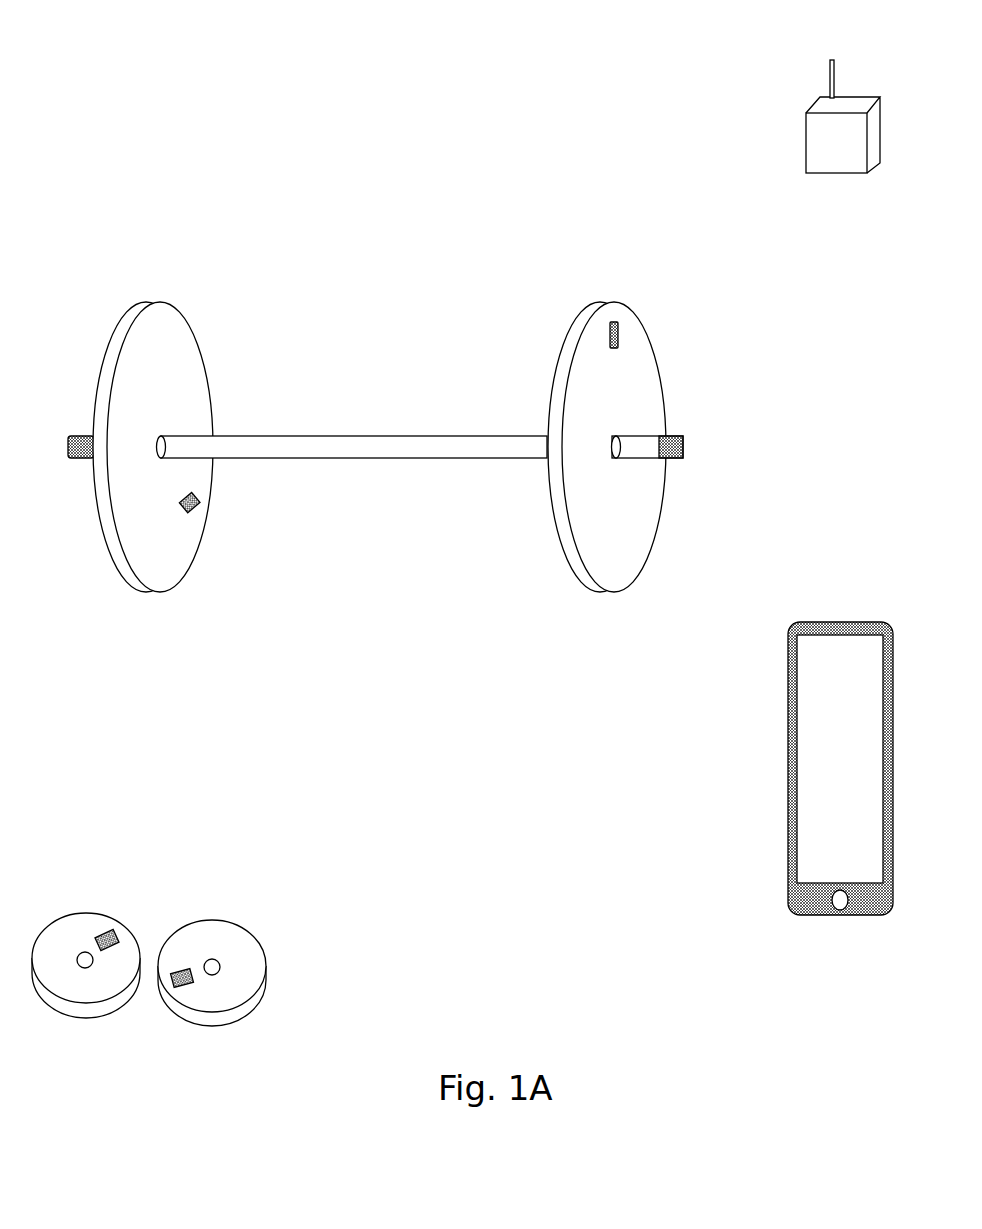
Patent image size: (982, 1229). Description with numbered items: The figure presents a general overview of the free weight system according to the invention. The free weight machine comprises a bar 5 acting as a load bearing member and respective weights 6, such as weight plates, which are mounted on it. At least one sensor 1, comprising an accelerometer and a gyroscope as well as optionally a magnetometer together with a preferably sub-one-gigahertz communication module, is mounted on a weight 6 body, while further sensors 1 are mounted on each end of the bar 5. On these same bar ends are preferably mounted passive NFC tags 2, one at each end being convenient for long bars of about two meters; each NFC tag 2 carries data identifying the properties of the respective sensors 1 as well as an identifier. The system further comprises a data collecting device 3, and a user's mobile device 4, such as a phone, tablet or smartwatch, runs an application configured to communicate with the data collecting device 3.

The sensor 1 is at (665, 463).
The NFC tag 2 is at (667, 427).
The data collecting device 3 is at (852, 93).
The mobile device 4 is at (843, 743).
The bar 5 is at (352, 436).
The weight 6 is at (566, 550).